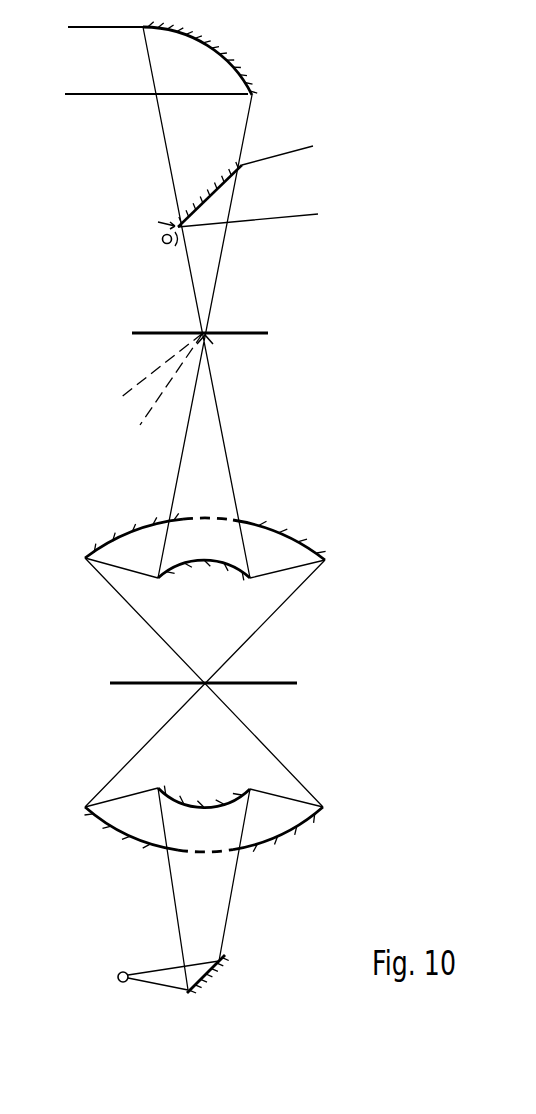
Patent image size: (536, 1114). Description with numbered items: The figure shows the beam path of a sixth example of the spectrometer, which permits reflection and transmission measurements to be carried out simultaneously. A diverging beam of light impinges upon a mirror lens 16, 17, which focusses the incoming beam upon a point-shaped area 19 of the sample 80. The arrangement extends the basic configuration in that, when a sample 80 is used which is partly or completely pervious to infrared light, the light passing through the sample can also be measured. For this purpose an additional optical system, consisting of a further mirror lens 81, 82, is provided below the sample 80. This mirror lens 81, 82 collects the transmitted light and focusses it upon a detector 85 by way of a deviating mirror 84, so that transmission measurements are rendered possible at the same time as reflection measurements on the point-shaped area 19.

The mirror lens 16 is at (203, 562).
The mirror lens 17 is at (118, 535).
The point-shaped area 19 is at (205, 683).
The sample 80 is at (267, 683).
The mirror lens 81 is at (198, 806).
The mirror lens 82 is at (112, 831).
The deviating mirror 84 is at (206, 982).
The detector 85 is at (120, 981).